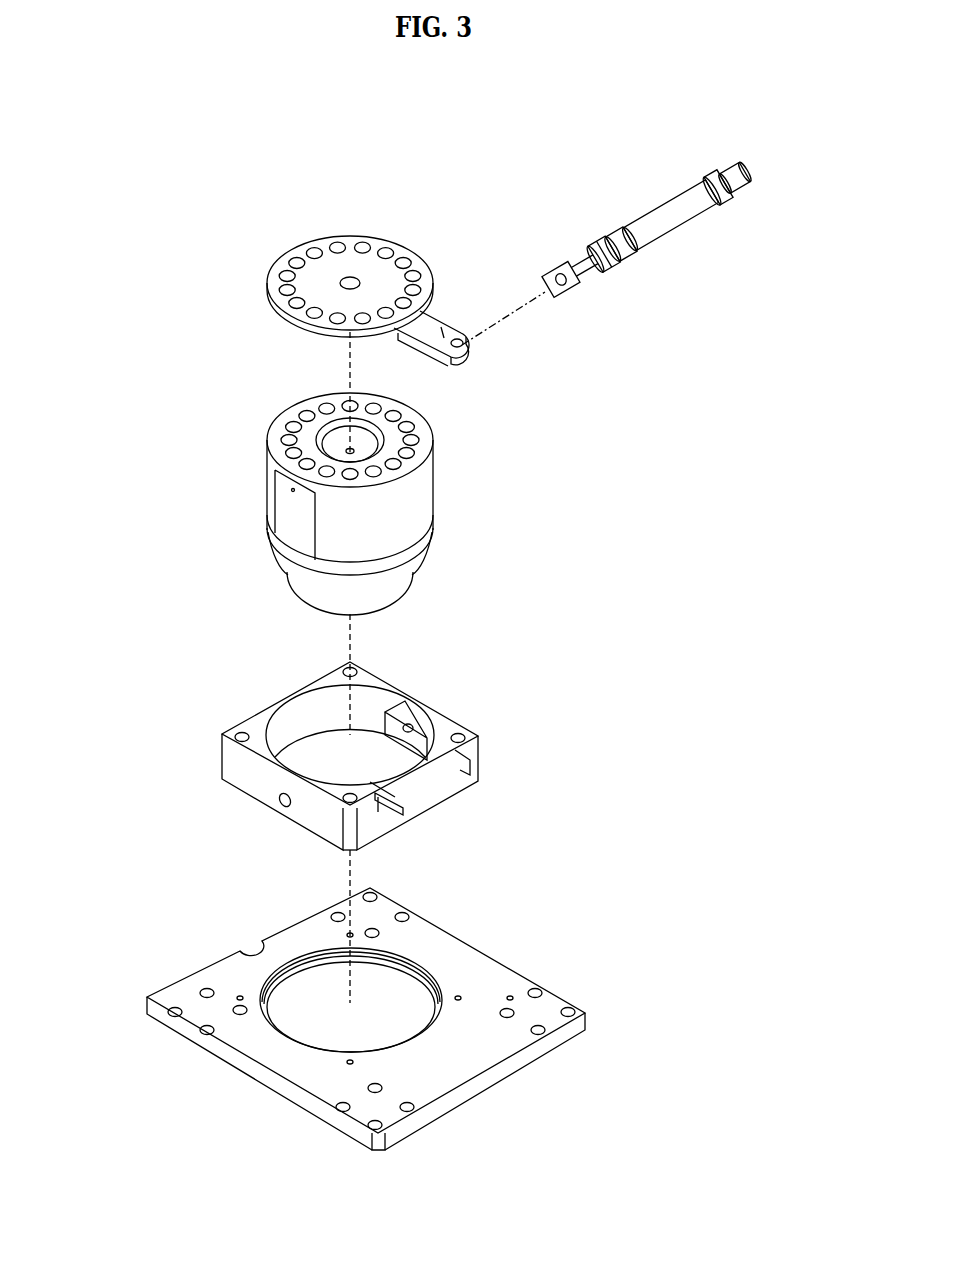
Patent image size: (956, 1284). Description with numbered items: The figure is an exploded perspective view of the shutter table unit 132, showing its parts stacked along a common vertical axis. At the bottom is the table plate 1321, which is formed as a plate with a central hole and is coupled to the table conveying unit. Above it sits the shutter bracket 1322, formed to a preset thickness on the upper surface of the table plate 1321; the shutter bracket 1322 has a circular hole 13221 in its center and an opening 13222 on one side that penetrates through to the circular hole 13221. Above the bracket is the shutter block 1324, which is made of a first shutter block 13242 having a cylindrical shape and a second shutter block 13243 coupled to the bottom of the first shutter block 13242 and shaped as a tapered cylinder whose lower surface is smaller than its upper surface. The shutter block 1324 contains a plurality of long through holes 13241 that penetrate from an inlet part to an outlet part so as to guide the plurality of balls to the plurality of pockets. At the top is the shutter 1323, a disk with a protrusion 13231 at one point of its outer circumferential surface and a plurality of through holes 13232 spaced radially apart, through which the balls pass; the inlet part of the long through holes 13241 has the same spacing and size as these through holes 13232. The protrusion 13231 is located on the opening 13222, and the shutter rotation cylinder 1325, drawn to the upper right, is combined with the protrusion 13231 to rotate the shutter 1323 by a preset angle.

The shutter table unit 132 is at (102, 864).
The table plate 1321 is at (585, 1018).
The shutter bracket 1322 is at (478, 758).
The circular hole 13221 is at (298, 718).
The opening 13222 is at (423, 777).
The shutter 1323 is at (272, 270).
The protrusion 13231 is at (472, 350).
The through holes 13232 is at (314, 252).
The shutter block 1324 is at (620, 492).
The long through holes 13241 is at (297, 438).
The first shutter block 13242 is at (432, 505).
The second shutter block 13243 is at (430, 557).
The shutter rotation cylinder 1325 is at (683, 232).